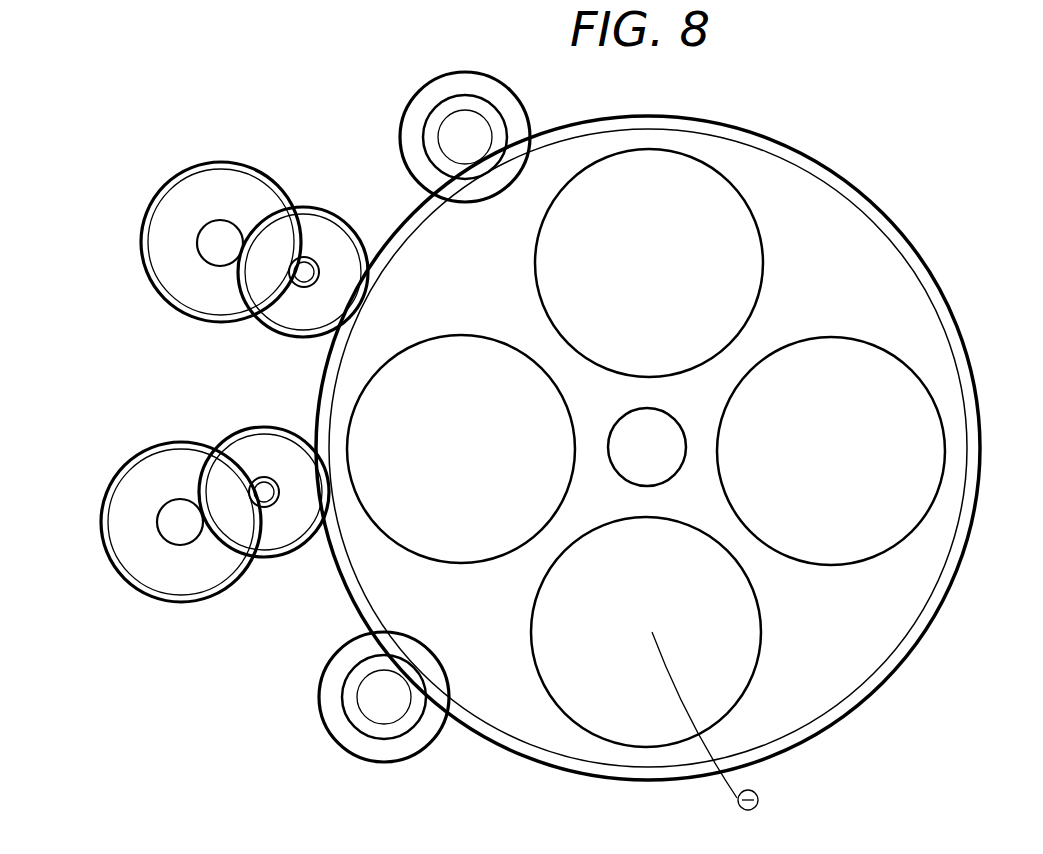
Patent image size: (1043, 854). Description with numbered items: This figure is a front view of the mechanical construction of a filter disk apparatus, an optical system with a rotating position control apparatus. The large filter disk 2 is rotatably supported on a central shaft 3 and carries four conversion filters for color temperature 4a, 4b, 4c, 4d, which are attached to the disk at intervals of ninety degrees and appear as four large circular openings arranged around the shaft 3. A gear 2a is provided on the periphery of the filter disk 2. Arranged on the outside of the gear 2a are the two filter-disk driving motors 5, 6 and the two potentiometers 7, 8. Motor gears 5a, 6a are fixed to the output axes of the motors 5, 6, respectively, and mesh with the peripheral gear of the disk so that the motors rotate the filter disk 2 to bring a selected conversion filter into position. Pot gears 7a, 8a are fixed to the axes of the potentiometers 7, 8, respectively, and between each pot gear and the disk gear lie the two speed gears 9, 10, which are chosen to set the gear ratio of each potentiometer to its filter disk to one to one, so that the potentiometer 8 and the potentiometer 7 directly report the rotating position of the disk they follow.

The filter disk 2 is at (503, 725).
The gear 2a is at (537, 763).
The shaft 3 is at (667, 470).
The conversion filter for color temperature 4a is at (623, 730).
The conversion filter for color temperature 4b is at (385, 390).
The conversion filter for color temperature 4c is at (732, 215).
The conversion filter for color temperature 4d is at (915, 477).
The motor 5 is at (438, 92).
The motor gear 5a is at (430, 125).
The motor 6 is at (333, 718).
The motor gear 6a is at (355, 682).
The potentiometer 7 is at (210, 228).
The pot gear 7a is at (158, 223).
The potentiometer 8 is at (137, 470).
The pot gear 8a is at (105, 500).
The speed gear 9 is at (328, 233).
The speed gear 10 is at (238, 435).